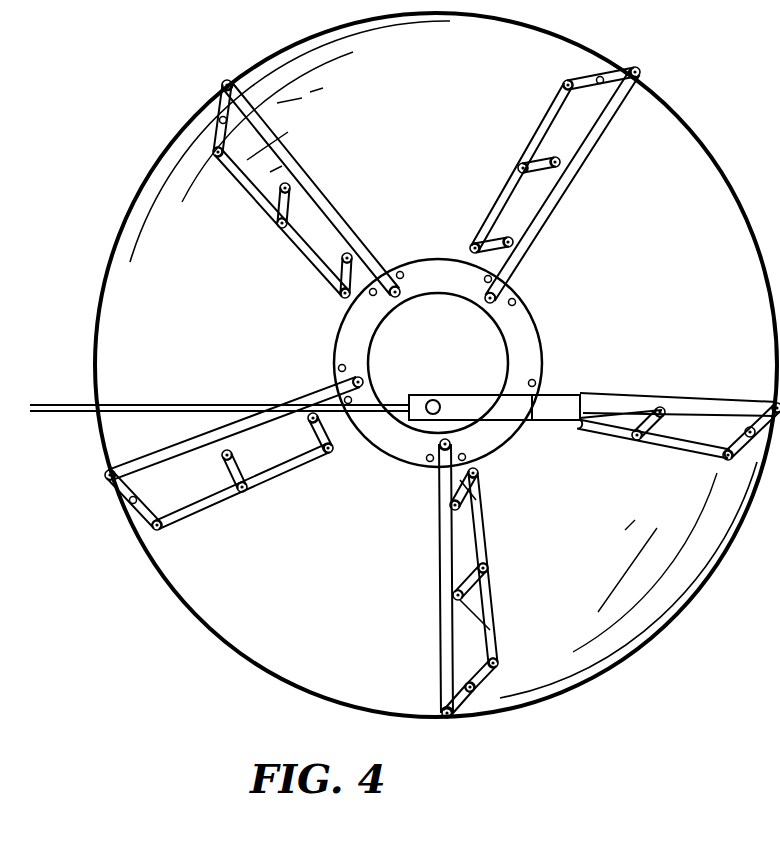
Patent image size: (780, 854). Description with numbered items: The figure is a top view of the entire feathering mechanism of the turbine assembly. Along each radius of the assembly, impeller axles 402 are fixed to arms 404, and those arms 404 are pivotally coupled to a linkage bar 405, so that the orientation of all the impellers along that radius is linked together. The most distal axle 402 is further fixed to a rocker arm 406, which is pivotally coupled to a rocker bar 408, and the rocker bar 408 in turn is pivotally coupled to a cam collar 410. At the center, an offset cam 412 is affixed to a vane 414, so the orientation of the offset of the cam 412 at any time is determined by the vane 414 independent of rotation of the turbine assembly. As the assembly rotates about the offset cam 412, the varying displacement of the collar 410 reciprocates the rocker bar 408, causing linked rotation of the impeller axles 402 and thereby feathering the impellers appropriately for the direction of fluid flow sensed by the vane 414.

The impeller axle 402 is at (490, 620).
The arm 404 is at (485, 505).
The linkage bar 405 is at (478, 535).
The rocker arm 406 is at (460, 697).
The rocker bar 408 is at (447, 582).
The cam collar 410 is at (492, 432).
The offset cam 412 is at (458, 357).
The vane 414 is at (512, 405).